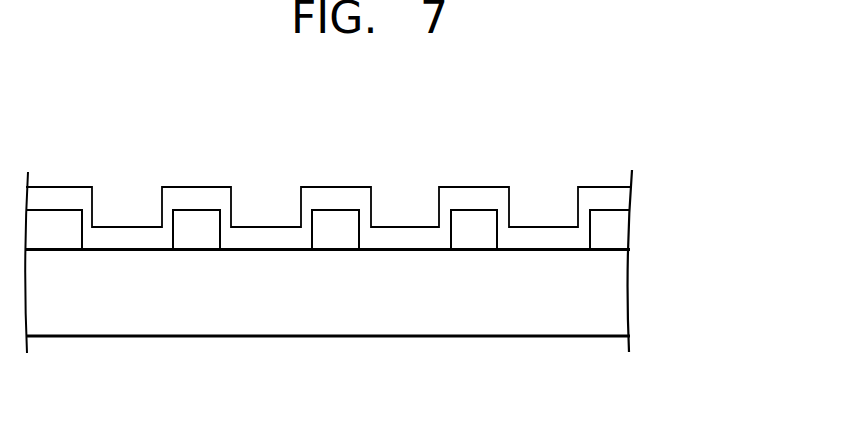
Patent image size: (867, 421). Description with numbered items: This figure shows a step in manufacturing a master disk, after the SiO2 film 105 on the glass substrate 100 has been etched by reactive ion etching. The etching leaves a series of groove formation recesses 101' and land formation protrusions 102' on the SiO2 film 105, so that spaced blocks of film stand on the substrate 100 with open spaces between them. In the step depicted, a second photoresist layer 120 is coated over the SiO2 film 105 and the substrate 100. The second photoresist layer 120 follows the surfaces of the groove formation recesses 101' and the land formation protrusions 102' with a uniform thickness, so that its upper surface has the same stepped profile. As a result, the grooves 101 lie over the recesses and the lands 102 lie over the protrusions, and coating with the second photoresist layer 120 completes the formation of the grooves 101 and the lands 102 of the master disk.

The substrate 100 is at (610, 292).
The SiO2 film 105 is at (613, 233).
The second photoresist layer 120 is at (607, 193).
The grooves 101 is at (127, 180).
The lands 102 is at (196, 160).
The groove formation recesses 101' is at (127, 333).
The land formation protrusions 102' is at (58, 313).